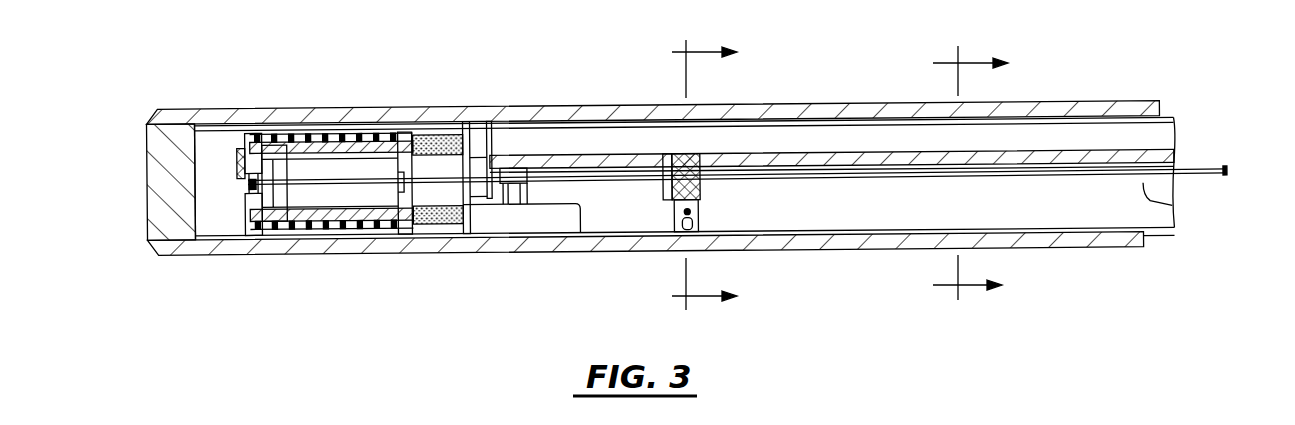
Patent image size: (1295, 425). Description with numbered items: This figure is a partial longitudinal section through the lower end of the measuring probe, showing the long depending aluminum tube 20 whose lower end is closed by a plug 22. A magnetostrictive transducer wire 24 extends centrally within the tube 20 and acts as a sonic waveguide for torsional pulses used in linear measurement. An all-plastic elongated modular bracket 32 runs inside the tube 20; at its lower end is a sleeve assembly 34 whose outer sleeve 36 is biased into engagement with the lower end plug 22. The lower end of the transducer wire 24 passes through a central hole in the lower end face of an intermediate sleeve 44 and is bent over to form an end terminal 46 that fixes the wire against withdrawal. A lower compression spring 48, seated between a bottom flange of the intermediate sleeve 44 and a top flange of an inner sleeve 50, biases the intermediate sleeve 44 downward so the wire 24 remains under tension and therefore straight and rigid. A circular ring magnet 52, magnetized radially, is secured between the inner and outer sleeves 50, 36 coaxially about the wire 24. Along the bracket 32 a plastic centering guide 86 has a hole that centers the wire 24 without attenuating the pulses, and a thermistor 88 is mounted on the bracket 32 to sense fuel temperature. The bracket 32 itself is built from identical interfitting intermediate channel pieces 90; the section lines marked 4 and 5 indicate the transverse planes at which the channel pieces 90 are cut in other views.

The tube 20 is at (1070, 248).
The plug 22 is at (157, 189).
The magnetostrictive transducer wire 24 is at (1172, 206).
The modular bracket 32 is at (893, 214).
The sleeve assembly 34 is at (230, 205).
The outer sleeve 36 is at (507, 222).
The intermediate sleeve 44 is at (284, 232).
The end terminal 46 is at (238, 182).
The lower compression spring 48 is at (380, 134).
The inner sleeve 50 is at (405, 232).
The ring magnet 52 is at (446, 134).
The centering guide 86 is at (733, 102).
The thermistor 88 is at (705, 224).
The intermediate channel piece 90 is at (985, 153).
The section line 4- 4 is at (704, 175).
The section line 5- 5 is at (970, 176).